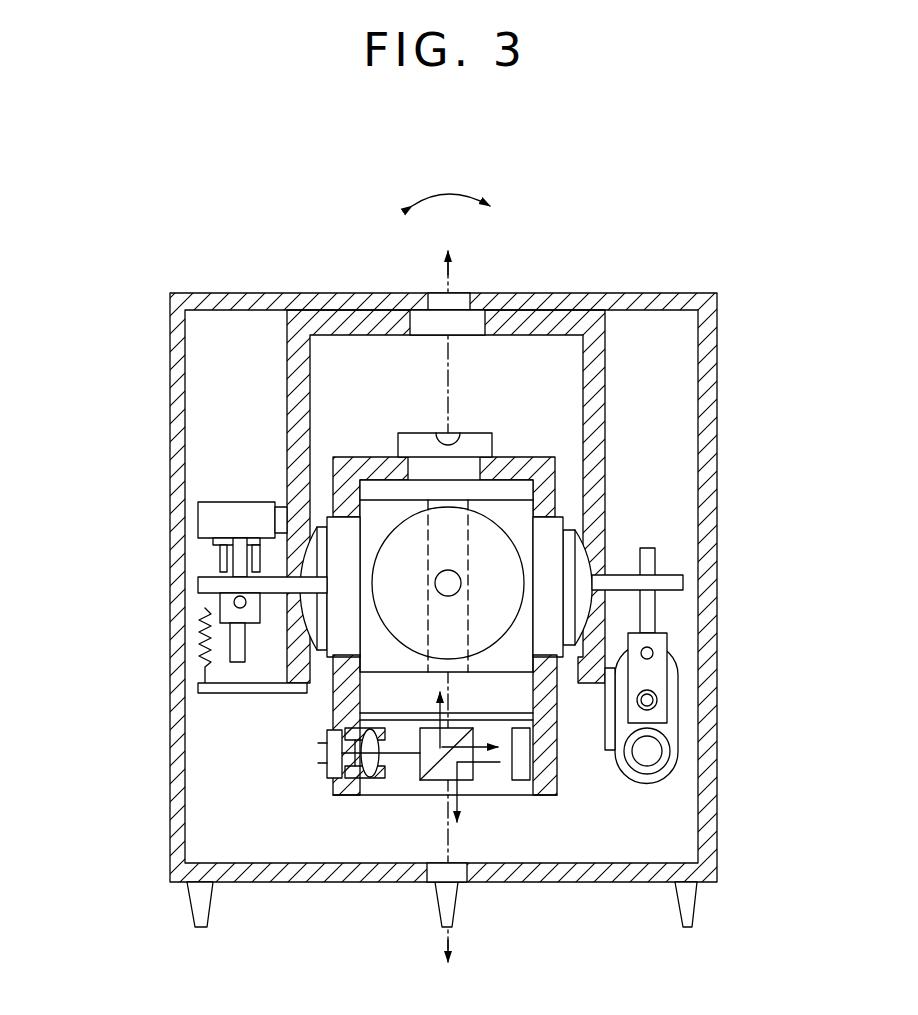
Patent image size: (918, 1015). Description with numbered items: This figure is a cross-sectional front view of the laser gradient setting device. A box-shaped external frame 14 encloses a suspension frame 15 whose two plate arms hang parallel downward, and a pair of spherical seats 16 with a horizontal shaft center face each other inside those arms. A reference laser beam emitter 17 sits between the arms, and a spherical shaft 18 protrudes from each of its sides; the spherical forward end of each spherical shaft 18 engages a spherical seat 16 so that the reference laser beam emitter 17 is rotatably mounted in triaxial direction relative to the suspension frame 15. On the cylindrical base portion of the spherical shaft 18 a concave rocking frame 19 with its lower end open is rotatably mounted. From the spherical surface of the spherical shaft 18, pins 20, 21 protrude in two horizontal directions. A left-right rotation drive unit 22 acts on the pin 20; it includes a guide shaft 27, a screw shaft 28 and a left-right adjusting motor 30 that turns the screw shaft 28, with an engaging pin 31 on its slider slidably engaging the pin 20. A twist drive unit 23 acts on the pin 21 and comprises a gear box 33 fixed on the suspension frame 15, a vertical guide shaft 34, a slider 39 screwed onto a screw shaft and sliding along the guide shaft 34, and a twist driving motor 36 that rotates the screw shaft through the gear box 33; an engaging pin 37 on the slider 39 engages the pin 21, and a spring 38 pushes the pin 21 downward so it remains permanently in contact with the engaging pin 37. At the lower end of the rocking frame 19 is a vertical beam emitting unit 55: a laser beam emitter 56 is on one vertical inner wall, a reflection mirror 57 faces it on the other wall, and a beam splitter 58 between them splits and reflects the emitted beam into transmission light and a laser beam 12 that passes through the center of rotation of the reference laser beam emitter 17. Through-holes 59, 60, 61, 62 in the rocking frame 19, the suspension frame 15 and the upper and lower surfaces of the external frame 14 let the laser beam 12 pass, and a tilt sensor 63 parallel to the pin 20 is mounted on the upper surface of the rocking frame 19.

The laser beam 12 is at (450, 279).
The external frame 14 is at (630, 300).
The suspension frame 15 is at (607, 392).
The spherical seat 16 is at (593, 525).
The reference laser beam emitter 17 is at (500, 518).
The spherical shaft 18 is at (588, 557).
The rocking frame 19 is at (557, 777).
The pin 20 is at (683, 583).
The pin 21 is at (198, 585).
The left-right rotation drive unit 22 is at (678, 740).
The twist drive unit 23 is at (217, 486).
The guide shaft 27 is at (653, 655).
The screw shaft 28 is at (657, 700).
The left-right adjusting motor 30 is at (647, 767).
The engaging pin 31 is at (655, 560).
The gear box 33 is at (243, 515).
The guide shaft 34 is at (238, 657).
The twist driving motor 36 is at (218, 553).
The engaging pin 37 is at (233, 603).
The spring 38 is at (205, 640).
The slider 39 is at (252, 610).
The vertical beam emitting unit 55 is at (489, 812).
The laser beam emitter 56 is at (368, 800).
The reflection mirror 57 is at (525, 780).
The beam splitter 58 is at (420, 775).
The through-hole 59 is at (408, 470).
The through-hole 60 is at (422, 325).
The through-hole 61 is at (437, 298).
The through-hole 62 is at (427, 872).
The tilt sensor 63 is at (478, 443).